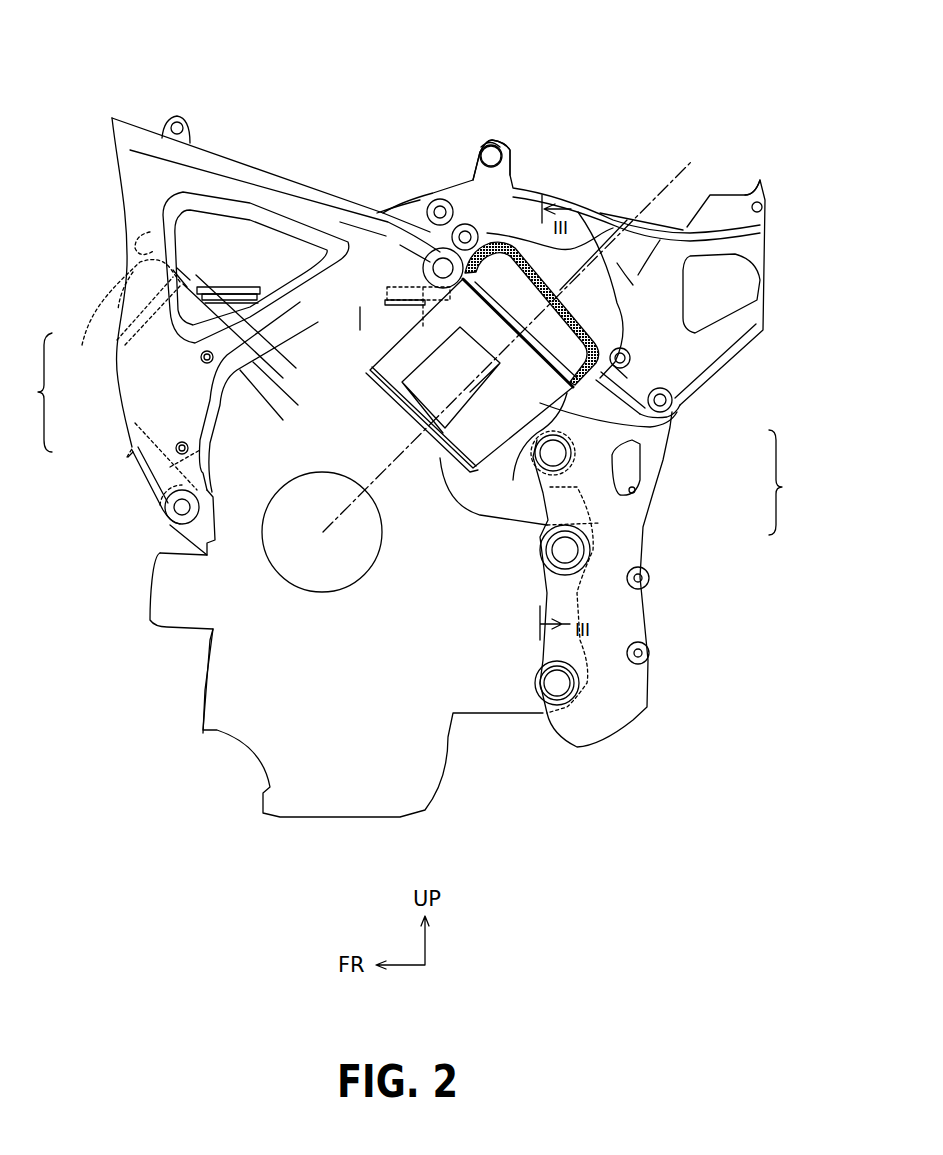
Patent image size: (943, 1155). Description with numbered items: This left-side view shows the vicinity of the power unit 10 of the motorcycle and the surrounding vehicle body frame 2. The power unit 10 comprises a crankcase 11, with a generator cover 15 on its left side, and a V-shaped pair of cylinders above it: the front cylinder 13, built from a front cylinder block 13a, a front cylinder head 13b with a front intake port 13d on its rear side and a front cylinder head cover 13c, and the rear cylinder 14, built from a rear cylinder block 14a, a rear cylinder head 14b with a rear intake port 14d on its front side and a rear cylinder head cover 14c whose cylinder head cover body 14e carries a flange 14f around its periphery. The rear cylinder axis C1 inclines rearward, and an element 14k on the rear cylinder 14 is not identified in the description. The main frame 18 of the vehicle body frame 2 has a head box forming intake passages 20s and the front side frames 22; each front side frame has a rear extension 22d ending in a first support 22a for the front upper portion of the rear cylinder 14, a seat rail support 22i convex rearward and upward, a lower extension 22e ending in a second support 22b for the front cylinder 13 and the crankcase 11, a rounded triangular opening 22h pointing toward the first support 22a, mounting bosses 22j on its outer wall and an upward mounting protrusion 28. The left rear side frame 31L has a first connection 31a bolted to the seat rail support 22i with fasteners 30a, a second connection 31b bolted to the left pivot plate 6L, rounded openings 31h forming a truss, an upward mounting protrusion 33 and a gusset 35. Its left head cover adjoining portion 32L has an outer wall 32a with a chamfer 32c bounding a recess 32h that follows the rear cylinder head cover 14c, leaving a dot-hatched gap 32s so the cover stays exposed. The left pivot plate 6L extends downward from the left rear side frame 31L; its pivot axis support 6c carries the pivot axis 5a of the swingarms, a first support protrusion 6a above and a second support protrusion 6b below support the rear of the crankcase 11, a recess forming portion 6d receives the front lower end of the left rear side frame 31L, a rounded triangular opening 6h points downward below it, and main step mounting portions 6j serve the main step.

The vehicle body frame 2 is at (602, 200).
The pivot axis 5a is at (567, 550).
The left pivot plate 6L is at (593, 747).
The first support protrusion 6a is at (543, 470).
The second support protrusion 6b is at (537, 683).
The pivot axis support 6c is at (533, 547).
The recess forming portion 6d is at (630, 390).
The opening 6h is at (633, 493).
The main step mounting portions 6j is at (650, 653).
The power unit 10 is at (300, 820).
The crankcase 11 is at (207, 673).
The front cylinder 13 is at (33, 392).
The front cylinder block 13a is at (253, 433).
The front cylinder head 13b is at (227, 400).
The front cylinder head cover 13c is at (118, 298).
The front intake port 13d is at (223, 290).
The rear cylinder 14 is at (590, 407).
The rear cylinder block 14a is at (600, 523).
The rear cylinder head 14b is at (540, 420).
The rear cylinder head cover 14c is at (560, 410).
The rear intake port 14d is at (400, 313).
The cylinder head cover body 14e is at (516, 258).
The flange 14f is at (382, 380).
The cylinder block projection 14k is at (520, 433).
The generator cover 15 is at (277, 560).
The main frame 18 is at (207, 146).
The intake passages 20s is at (141, 236).
The front side frames 22 is at (140, 150).
The first support 22a is at (412, 262).
The second support 22b is at (168, 520).
The rear extension 22d is at (383, 247).
The lower extension 22e is at (155, 472).
The opening 22h is at (240, 220).
The seat rail support 22i is at (383, 243).
The mounting bosses 22j is at (215, 360).
The mounting protrusions 28 is at (176, 118).
The fasteners 30a is at (668, 413).
The left rear side frame 31L is at (713, 323).
The first connection 31a is at (438, 200).
The second connection 31b is at (625, 378).
The openings 31h is at (720, 253).
The left head cover adjoining portion 32L is at (586, 188).
The outer wall 32a is at (638, 275).
The chamfer 32c is at (617, 265).
The recess 32h is at (515, 240).
The gap 32s is at (482, 140).
The mounting protrusion 33 is at (496, 140).
The gusset 35 is at (743, 190).
The rear cylinder axis C1 is at (690, 148).